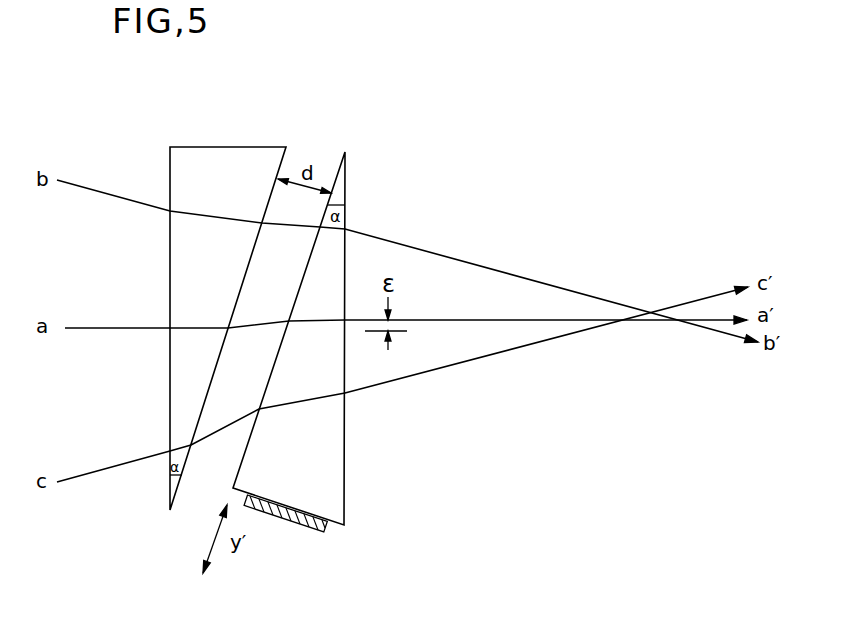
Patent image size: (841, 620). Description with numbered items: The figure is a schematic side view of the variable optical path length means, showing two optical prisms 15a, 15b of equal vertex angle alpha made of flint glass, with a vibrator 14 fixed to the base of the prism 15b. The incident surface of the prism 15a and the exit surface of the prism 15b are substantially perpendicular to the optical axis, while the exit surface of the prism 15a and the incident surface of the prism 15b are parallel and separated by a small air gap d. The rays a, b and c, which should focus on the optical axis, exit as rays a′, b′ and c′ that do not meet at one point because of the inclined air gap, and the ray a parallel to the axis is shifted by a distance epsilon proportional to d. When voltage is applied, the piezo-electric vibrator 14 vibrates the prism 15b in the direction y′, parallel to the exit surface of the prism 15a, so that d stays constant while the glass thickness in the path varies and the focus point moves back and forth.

The vibrator 14 is at (323, 534).
The optical prism 15a is at (246, 161).
The optical prism 15b is at (335, 257).